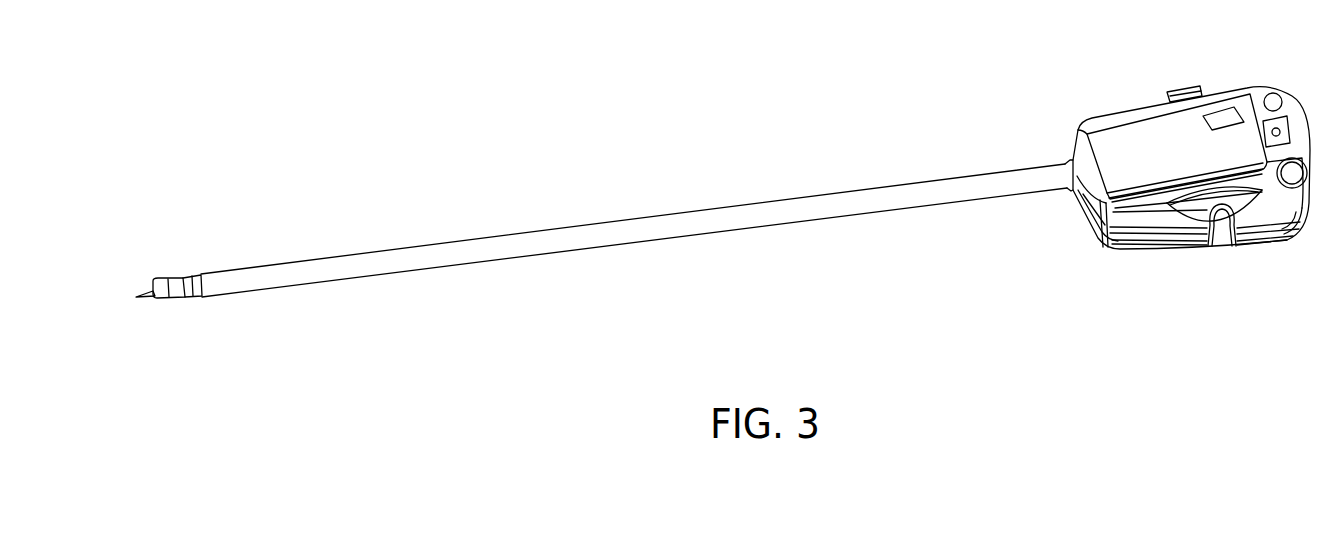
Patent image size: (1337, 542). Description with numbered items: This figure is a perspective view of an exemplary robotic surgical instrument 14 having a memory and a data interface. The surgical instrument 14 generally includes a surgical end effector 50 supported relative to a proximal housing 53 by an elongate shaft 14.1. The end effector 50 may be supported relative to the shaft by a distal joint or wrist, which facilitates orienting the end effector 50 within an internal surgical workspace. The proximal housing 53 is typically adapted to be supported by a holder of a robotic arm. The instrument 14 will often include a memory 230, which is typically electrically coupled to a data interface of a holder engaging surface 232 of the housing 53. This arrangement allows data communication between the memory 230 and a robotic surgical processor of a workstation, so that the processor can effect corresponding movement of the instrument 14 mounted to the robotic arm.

The surgical instrument 14 is at (753, 113).
The elongate shaft 14.1 is at (675, 223).
The surgical end effector 50 is at (187, 254).
The housing 53 is at (1110, 80).
The memory 230 is at (1227, 107).
The holder engaging surface 232 is at (1287, 241).